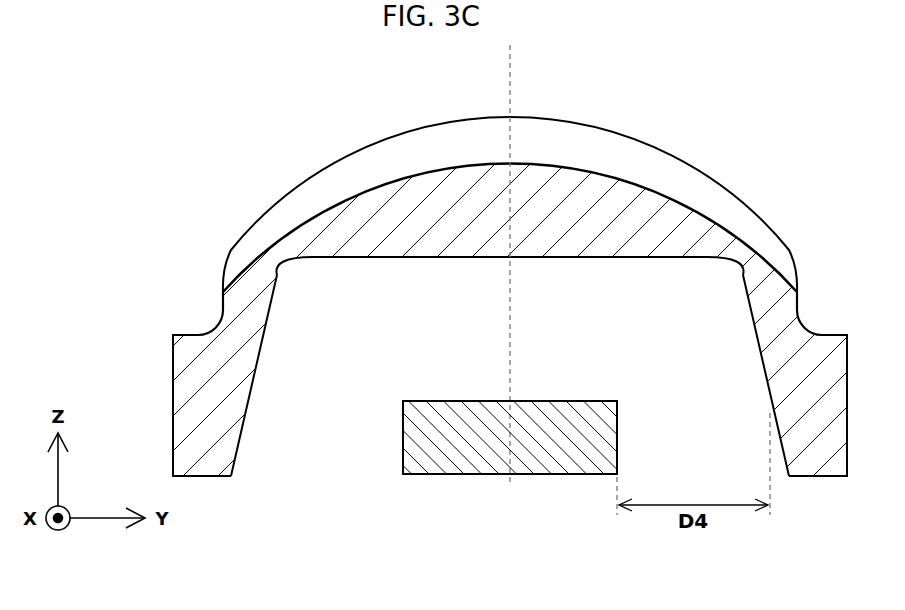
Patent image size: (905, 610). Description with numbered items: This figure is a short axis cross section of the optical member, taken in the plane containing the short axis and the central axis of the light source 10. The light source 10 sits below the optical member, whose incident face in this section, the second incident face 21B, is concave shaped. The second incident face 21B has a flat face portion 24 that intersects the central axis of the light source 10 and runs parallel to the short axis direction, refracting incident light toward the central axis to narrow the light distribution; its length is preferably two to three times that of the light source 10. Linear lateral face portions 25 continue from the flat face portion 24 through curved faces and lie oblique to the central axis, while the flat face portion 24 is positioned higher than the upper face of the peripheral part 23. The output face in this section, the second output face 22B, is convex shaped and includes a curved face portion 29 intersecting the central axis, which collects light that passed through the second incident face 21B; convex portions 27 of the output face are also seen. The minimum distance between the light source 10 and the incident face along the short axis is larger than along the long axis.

The light source 10 is at (458, 457).
The second incident face 21B is at (333, 255).
The second output face 22B is at (412, 175).
The peripheral part 23 is at (188, 333).
The flat face portion 24 is at (575, 257).
The lateral face portion 25 is at (257, 367).
The convex portion 27 is at (667, 150).
The curved face portion 29 is at (510, 167).